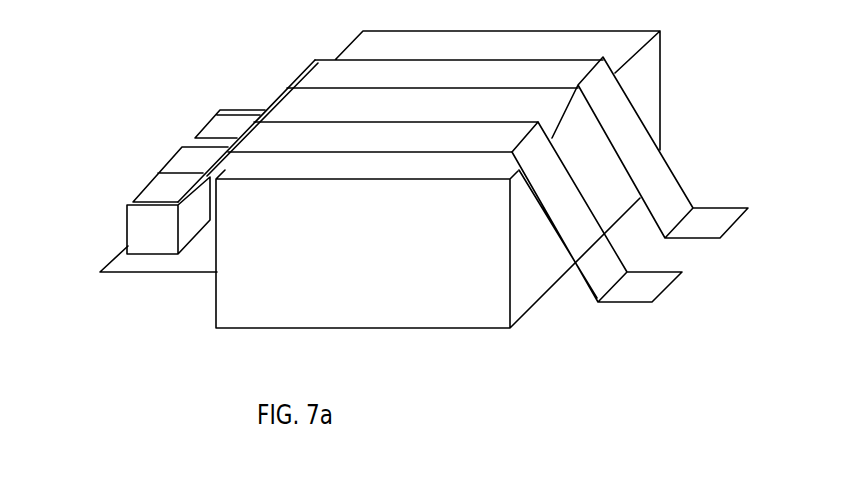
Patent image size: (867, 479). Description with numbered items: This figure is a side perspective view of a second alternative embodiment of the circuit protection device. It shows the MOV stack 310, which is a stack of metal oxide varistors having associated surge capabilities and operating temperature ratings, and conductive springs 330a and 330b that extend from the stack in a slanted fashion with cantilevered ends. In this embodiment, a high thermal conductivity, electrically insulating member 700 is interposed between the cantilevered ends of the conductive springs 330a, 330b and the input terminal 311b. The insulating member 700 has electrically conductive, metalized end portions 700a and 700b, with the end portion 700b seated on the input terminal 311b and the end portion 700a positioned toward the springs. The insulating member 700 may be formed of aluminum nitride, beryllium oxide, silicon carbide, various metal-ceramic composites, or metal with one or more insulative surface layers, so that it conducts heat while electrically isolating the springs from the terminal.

The MOV stack 310 is at (420, 295).
The input terminal 311b is at (127, 262).
The conductive spring 330a is at (668, 188).
The conductive spring 330b is at (593, 272).
The electrically insulating member 700 is at (173, 157).
The metalized end portion 700a is at (205, 120).
The metalized end portion 700b is at (135, 197).